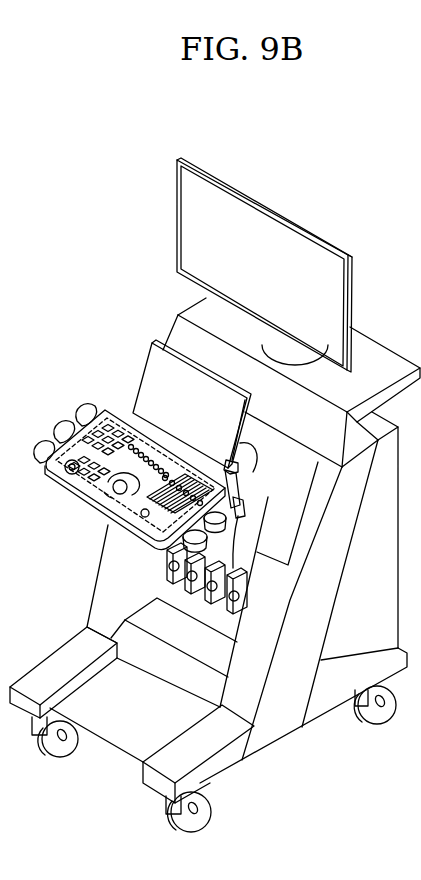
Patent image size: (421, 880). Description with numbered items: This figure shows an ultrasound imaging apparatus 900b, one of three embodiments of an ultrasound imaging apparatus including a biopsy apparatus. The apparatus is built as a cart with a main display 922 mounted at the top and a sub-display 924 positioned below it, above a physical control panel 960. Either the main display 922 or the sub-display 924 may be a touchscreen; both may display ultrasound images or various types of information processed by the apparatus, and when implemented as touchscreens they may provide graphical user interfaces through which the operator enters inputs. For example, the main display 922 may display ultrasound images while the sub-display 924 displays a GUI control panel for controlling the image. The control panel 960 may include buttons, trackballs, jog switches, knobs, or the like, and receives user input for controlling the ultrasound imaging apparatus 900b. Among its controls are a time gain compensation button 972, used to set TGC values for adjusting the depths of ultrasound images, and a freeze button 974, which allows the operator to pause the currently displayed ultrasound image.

The ultrasound imaging apparatus 900b is at (326, 122).
The main display 922 is at (237, 193).
The sub-display 924 is at (149, 351).
The control panel 960 is at (116, 416).
The time gain compensation (TGC) button 972 is at (140, 524).
The freeze button 974 is at (140, 514).